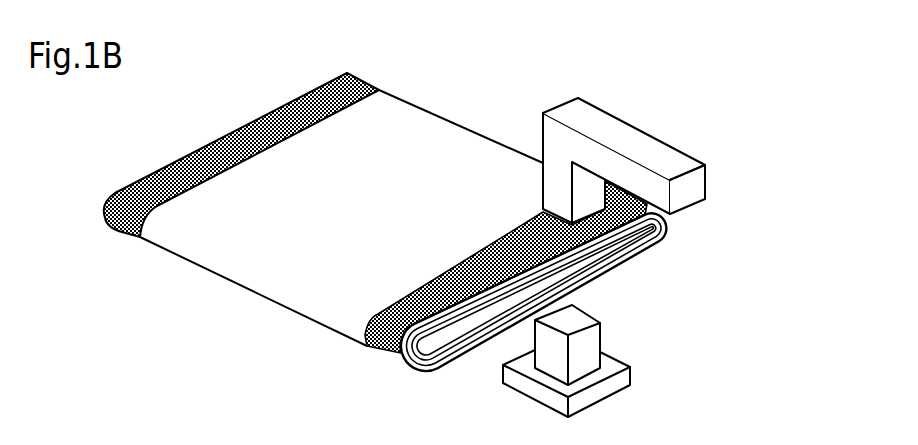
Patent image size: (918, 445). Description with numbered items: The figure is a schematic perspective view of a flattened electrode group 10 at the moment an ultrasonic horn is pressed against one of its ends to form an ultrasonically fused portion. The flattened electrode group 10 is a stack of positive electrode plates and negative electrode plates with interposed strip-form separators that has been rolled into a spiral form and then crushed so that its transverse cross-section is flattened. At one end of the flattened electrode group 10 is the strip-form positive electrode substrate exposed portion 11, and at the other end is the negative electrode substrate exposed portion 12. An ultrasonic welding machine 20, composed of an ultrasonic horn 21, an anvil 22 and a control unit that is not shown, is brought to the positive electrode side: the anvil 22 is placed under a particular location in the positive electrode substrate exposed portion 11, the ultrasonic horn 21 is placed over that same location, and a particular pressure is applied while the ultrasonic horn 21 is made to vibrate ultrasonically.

The flattened electrode group 10 is at (377, 206).
The positive electrode substrate exposed portion 11 is at (378, 348).
The negative electrode substrate exposed portion 12 is at (117, 228).
The ultrasonic welding machine 20 is at (646, 257).
The ultrasonic horn 21 is at (683, 193).
The anvil 22 is at (612, 367).